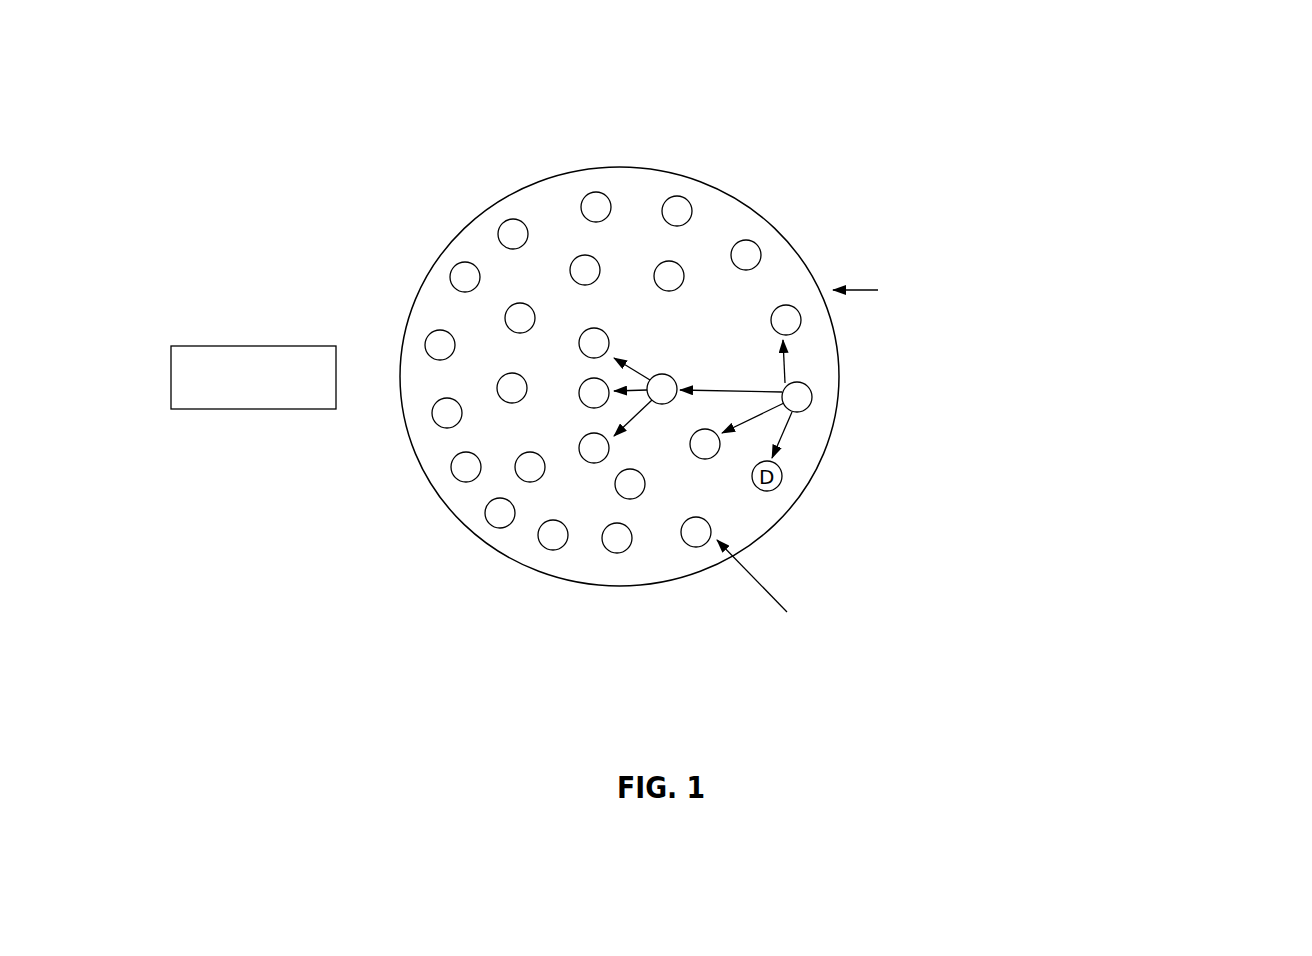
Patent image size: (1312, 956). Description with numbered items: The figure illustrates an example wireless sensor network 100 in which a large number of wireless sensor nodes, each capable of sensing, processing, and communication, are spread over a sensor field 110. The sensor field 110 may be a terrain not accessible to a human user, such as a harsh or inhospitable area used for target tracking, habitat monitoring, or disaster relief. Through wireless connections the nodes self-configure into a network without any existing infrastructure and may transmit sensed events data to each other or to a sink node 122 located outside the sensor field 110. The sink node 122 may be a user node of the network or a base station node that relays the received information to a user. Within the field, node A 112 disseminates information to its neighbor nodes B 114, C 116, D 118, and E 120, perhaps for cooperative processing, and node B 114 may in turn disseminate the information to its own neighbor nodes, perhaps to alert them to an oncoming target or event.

The wireless sensor network 100 is at (1210, 150).
The sensor field 110 is at (828, 445).
The node A 112 is at (812, 397).
The node B 114 is at (668, 377).
The node C 116 is at (801, 322).
The node D 118 is at (765, 492).
The node E 120 is at (705, 460).
The sink node 122 is at (171, 378).